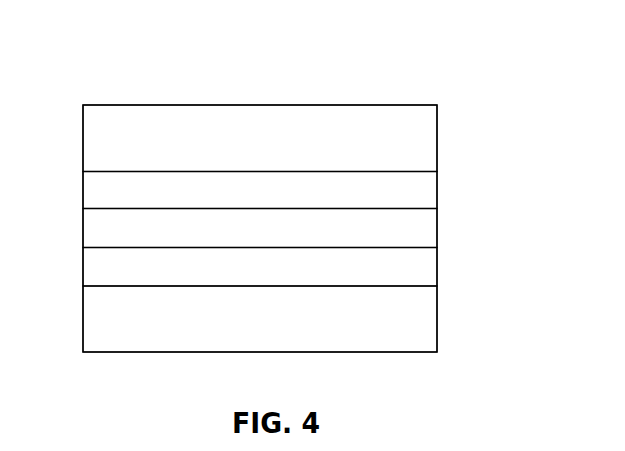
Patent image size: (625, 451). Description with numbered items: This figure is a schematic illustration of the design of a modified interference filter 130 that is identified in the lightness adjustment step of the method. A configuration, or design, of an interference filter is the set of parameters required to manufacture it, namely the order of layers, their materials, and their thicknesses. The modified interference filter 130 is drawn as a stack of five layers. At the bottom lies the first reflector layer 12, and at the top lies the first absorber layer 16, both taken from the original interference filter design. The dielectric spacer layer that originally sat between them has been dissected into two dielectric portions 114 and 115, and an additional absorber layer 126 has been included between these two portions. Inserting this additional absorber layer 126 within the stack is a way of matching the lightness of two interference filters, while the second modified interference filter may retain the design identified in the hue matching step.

The modified interference filter 130 is at (113, 39).
The first absorber layer 16 is at (437, 142).
The dielectric portion 114 is at (437, 197).
The additional absorber layer 126 is at (437, 234).
The dielectric portion 115 is at (437, 273).
The first reflector layer 12 is at (437, 333).